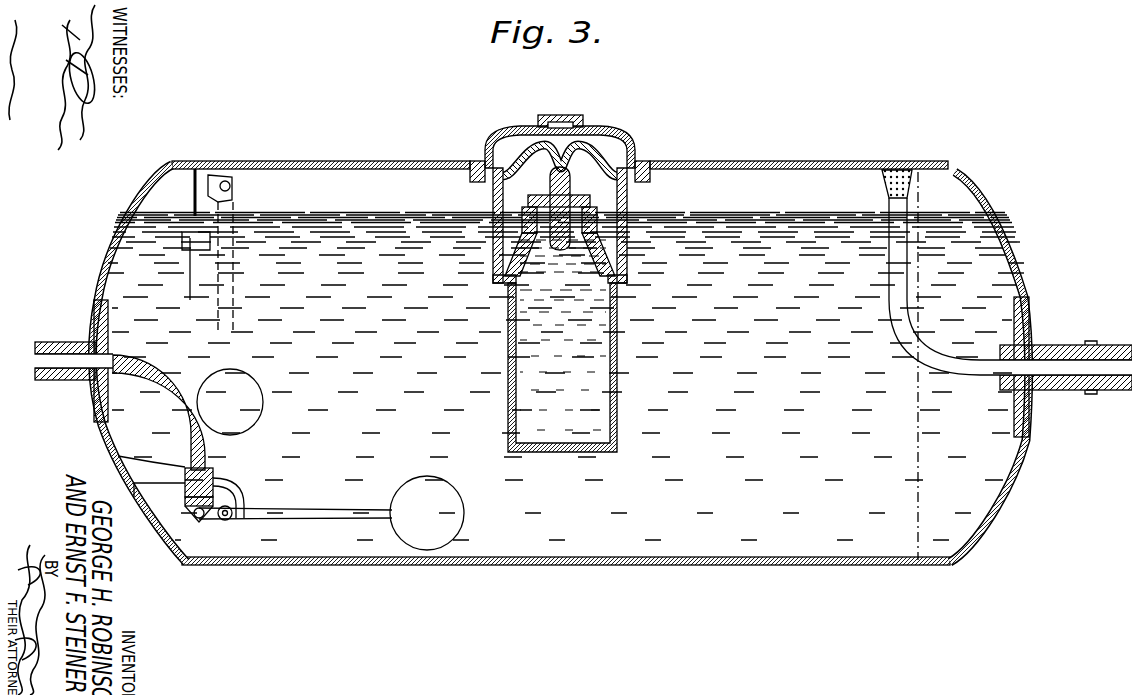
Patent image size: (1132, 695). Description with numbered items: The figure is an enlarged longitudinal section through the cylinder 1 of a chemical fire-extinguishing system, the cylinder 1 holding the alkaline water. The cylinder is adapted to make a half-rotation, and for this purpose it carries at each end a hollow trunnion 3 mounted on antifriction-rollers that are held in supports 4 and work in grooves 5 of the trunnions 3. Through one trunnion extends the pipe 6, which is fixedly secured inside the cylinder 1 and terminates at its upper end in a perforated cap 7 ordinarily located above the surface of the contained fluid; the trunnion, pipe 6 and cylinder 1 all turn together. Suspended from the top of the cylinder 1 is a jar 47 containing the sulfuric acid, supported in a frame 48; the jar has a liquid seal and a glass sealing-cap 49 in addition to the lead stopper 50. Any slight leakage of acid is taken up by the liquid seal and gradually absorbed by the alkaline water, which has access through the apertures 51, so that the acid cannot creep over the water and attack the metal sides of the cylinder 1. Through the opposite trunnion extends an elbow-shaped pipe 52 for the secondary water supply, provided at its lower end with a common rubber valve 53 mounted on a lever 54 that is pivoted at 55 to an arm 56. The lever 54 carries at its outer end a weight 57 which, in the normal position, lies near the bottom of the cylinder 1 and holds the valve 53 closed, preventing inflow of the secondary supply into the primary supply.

The cylinder 1 is at (352, 161).
The trunnions 3 is at (62, 348).
The supports 4 is at (560, 566).
The grooves 5 is at (1092, 391).
The pipe 6 is at (895, 285).
The perforated cap 7 is at (893, 176).
The jar 47 is at (604, 390).
The frame 48 is at (482, 167).
The glass sealing-cap 49 is at (572, 182).
The lead stopper 50 is at (600, 185).
The apertures 51 is at (500, 268).
The pipe 52 is at (180, 400).
The rubber valve 53 is at (216, 502).
The lever 54 is at (348, 497).
The pivot 55 is at (229, 520).
The arm 56 is at (230, 478).
The weight 57 is at (426, 477).